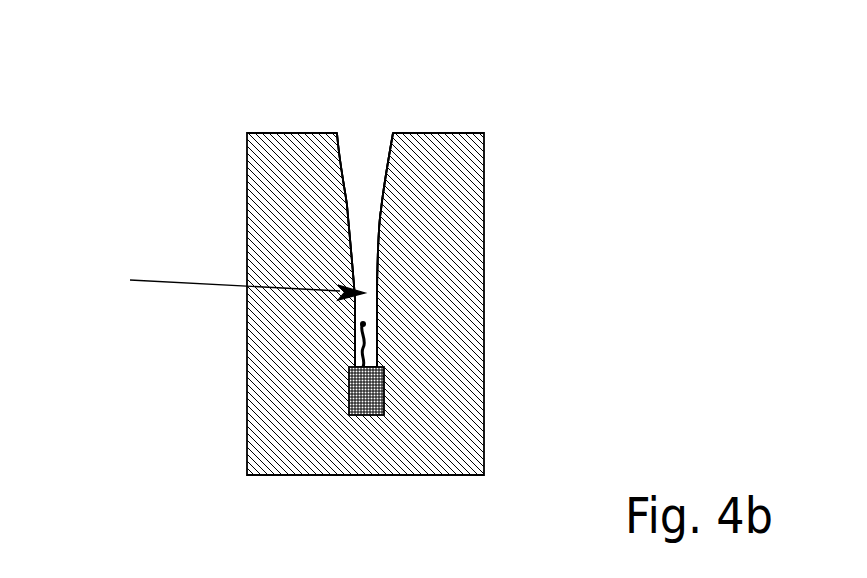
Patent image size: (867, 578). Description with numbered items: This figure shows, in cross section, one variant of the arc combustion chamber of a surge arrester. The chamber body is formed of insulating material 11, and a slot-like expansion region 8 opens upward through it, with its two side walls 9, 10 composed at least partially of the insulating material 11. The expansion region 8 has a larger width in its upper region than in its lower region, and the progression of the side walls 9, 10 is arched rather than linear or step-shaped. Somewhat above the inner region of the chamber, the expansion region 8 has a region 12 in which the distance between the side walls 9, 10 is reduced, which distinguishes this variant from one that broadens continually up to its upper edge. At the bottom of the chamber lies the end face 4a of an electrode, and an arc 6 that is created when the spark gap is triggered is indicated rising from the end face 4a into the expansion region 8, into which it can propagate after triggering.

The expansion region 8 is at (382, 200).
The side wall 9 is at (348, 218).
The side wall 10 is at (382, 237).
The insulating material 11 is at (278, 388).
The region 12 is at (229, 282).
The arc 6 is at (368, 336).
The end face 4a is at (384, 396).